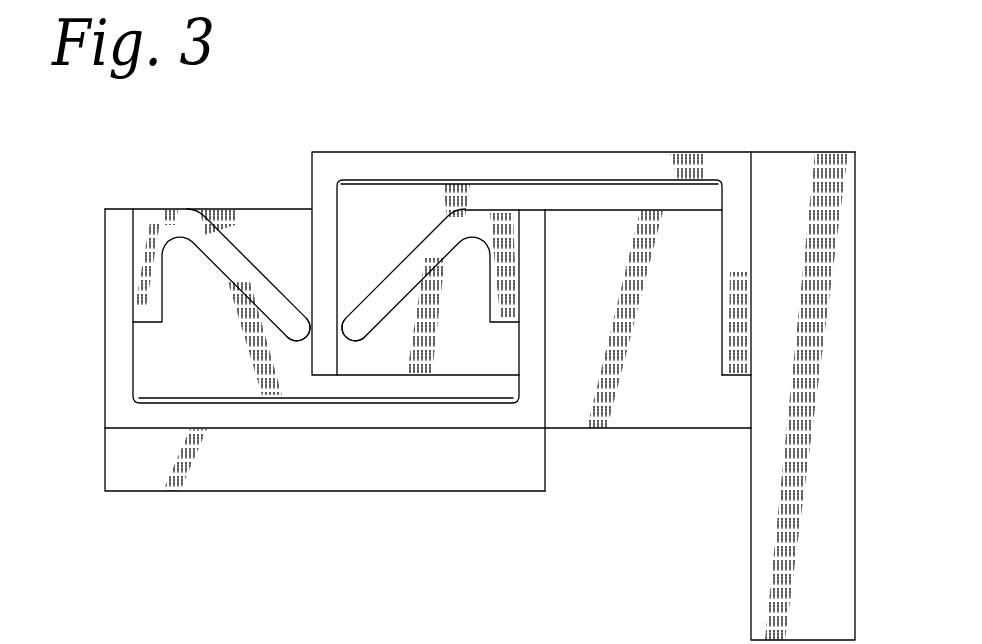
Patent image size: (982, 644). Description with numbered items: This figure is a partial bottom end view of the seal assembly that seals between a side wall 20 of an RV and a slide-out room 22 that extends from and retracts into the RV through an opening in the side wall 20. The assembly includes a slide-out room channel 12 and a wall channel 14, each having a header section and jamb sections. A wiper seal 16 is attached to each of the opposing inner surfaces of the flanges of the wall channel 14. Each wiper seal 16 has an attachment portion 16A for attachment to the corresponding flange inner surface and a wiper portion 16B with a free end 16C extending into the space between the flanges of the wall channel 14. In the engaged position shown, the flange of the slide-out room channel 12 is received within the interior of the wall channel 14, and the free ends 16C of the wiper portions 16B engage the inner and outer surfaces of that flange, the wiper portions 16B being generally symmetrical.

The slide-out room channel 12 is at (650, 162).
The wall channel 14 is at (105, 416).
The wiper seal 16 is at (158, 216).
The attachment portion 16A is at (145, 252).
The wiper portion 16B is at (247, 268).
The free end 16C is at (300, 332).
The side wall 20 is at (115, 318).
The slide-out room 22 is at (750, 493).